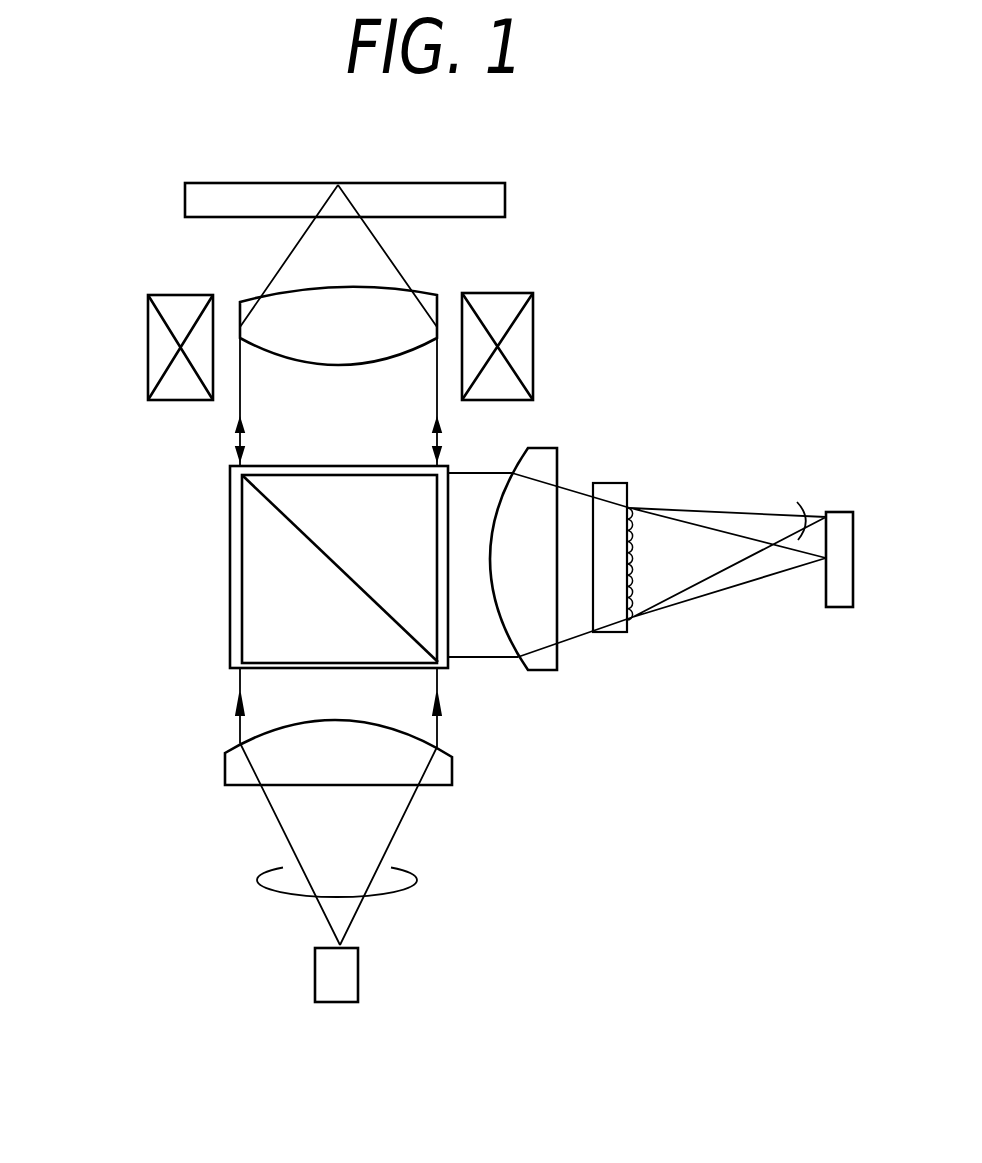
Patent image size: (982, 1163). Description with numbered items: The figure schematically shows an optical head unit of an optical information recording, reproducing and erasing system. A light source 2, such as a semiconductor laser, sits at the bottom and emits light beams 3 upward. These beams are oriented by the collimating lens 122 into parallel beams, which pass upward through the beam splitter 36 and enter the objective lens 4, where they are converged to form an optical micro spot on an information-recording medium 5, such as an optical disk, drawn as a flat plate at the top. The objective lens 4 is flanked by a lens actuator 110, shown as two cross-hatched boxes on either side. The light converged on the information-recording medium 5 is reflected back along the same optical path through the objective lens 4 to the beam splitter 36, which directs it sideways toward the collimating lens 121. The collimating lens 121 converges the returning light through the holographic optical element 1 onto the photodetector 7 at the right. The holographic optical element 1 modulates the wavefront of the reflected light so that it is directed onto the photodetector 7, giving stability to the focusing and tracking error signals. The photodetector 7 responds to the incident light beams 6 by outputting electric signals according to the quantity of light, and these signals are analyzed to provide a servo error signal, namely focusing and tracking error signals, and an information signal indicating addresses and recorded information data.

The holographic optical element 1 is at (607, 632).
The light source 2 is at (358, 982).
The light beams 3 is at (413, 877).
The objective lens 4 is at (425, 295).
The information-recording medium 5 is at (235, 182).
The incident light beams 6 is at (795, 500).
The photodetector 7 is at (855, 563).
The beam splitter 36 is at (230, 637).
The lens actuator 110 is at (149, 380).
The collimating lens 121 is at (558, 472).
The collimating lens 122 is at (225, 768).